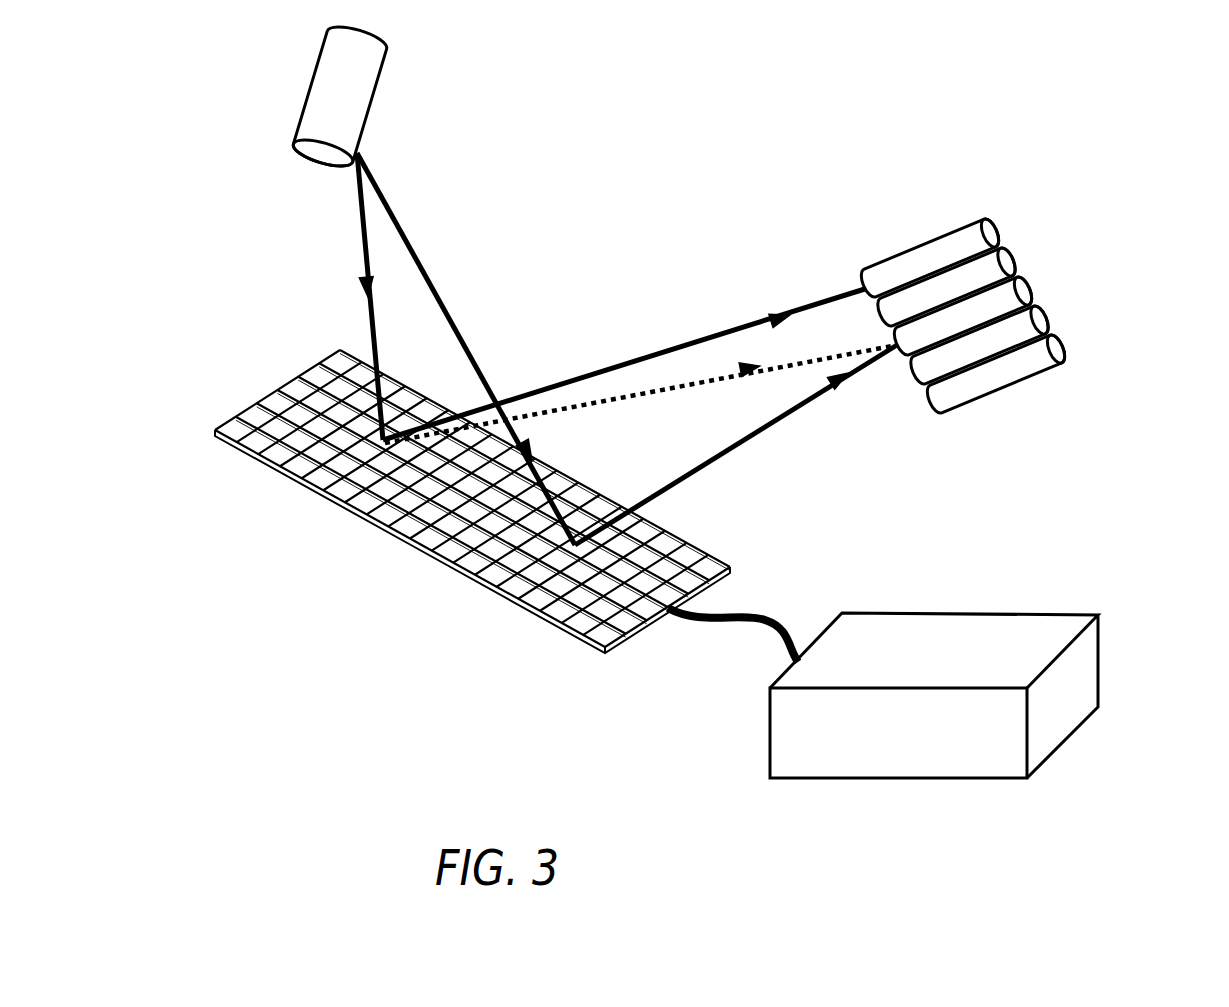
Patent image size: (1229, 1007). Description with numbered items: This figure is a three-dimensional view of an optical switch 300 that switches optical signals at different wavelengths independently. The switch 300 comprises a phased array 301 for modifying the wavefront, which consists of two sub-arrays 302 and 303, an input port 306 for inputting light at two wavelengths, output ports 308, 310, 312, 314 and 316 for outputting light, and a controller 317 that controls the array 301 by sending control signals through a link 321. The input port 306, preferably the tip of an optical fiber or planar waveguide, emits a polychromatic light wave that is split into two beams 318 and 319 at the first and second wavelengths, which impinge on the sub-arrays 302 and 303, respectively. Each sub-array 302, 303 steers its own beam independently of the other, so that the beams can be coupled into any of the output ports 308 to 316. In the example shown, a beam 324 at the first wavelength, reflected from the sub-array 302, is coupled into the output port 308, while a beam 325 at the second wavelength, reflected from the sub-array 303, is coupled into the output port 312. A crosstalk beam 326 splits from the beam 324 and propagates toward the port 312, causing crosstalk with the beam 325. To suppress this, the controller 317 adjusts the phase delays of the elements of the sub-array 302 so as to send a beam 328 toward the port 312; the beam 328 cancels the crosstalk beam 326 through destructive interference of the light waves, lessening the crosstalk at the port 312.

The optical switch 300 is at (667, 108).
The phased array 301 is at (680, 672).
The sub-array 302 is at (212, 447).
The sub-array 303 is at (403, 557).
The input port 306 is at (378, 97).
The output port 308 is at (997, 228).
The output port 310 is at (1020, 257).
The output port 312 is at (1033, 290).
The output port 314 is at (1043, 320).
The output port 316 is at (1062, 347).
The controller 317 is at (883, 749).
The beam 318 is at (358, 240).
The beam 319 is at (397, 217).
The link 321 is at (760, 608).
The beam 324 is at (708, 340).
The beam 325 is at (781, 418).
The crosstalk beam 326 is at (641, 353).
The beam 328 is at (628, 393).